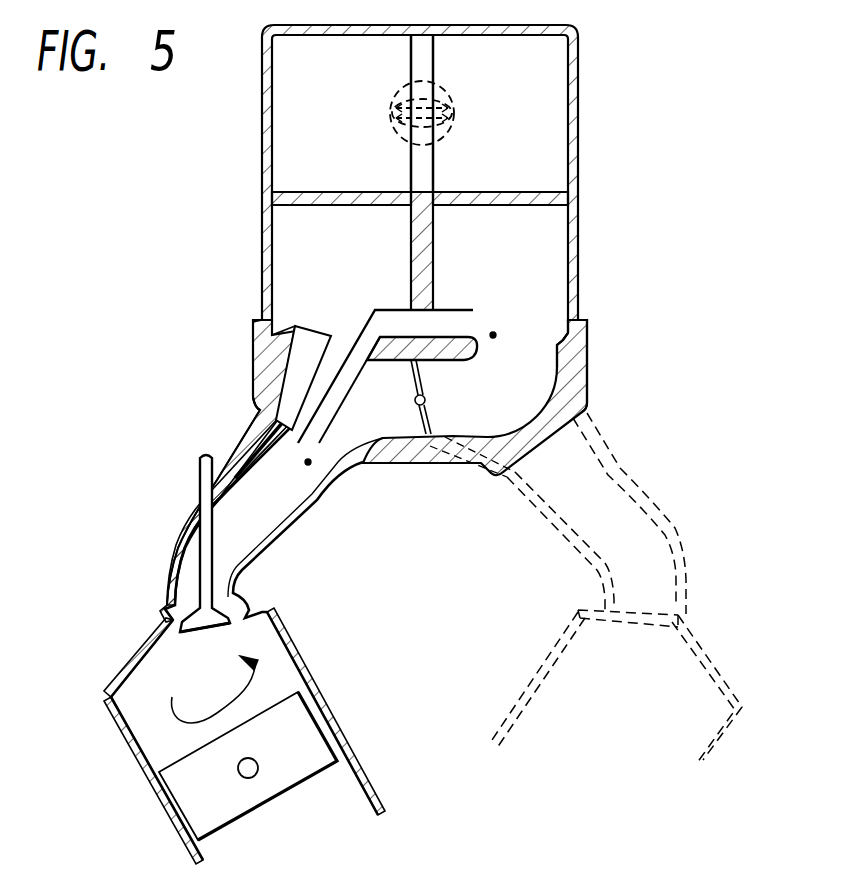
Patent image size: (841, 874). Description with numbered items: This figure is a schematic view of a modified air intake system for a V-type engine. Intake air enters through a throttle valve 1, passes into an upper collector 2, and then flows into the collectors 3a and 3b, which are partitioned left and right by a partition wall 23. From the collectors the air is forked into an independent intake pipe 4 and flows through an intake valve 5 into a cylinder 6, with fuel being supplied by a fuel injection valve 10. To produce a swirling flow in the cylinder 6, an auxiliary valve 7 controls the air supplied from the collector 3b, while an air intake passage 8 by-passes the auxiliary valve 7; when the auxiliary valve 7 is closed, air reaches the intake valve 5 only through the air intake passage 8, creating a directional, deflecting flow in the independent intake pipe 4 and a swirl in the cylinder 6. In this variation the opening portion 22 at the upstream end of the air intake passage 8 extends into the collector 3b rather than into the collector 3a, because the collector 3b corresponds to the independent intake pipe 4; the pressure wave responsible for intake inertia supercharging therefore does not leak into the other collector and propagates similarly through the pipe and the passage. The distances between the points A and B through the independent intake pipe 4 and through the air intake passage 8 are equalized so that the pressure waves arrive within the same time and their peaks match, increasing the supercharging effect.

The throttle valve 1 is at (447, 95).
The upper collector 2 is at (552, 118).
The collector 3a is at (285, 284).
The collector 3b is at (543, 248).
The partition wall 23 is at (411, 243).
The opening portion 22 is at (463, 327).
The air intake passage 8 is at (343, 393).
The auxiliary valve 7 is at (437, 407).
The fuel injection valve 10 is at (305, 378).
The independent intake pipe 4 is at (299, 480).
The intake valve 5 is at (203, 632).
The cylinder 6 is at (152, 736).
The point A is at (504, 336).
The point B is at (299, 464).